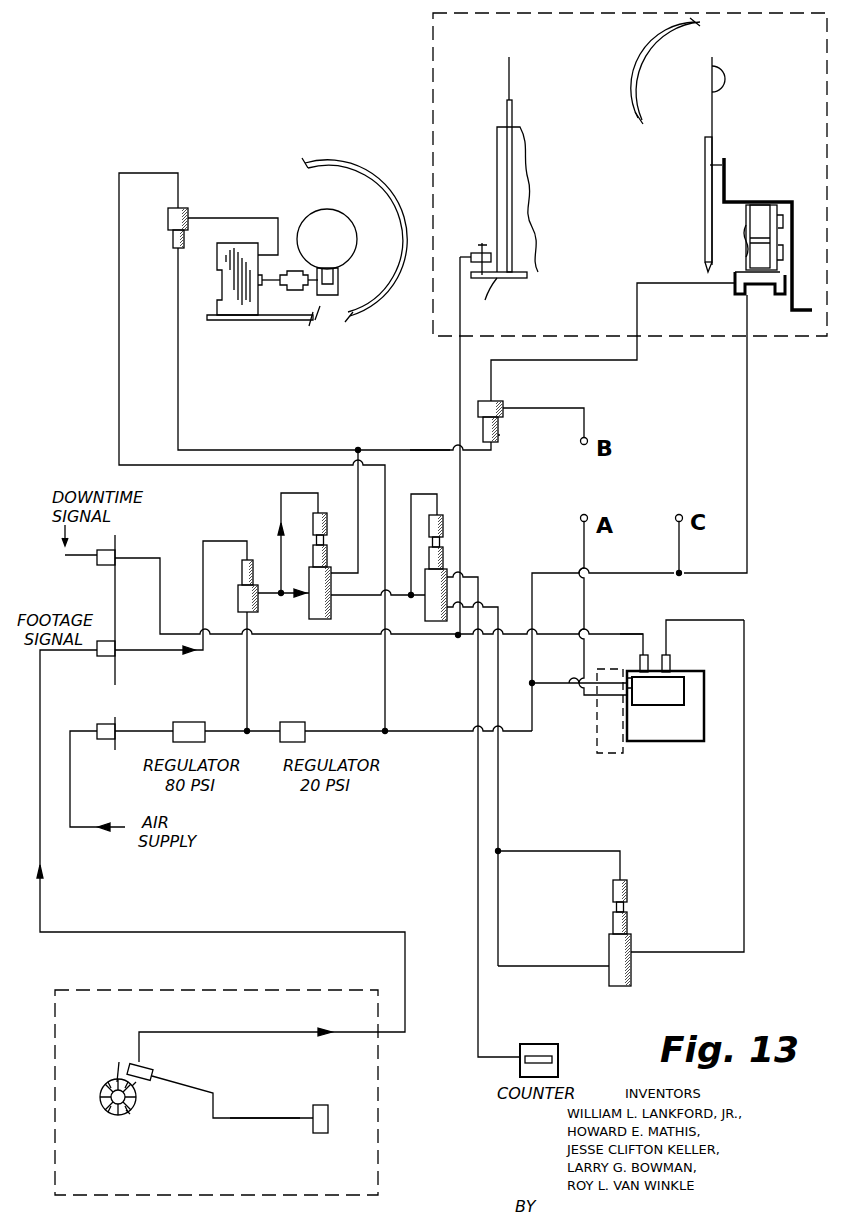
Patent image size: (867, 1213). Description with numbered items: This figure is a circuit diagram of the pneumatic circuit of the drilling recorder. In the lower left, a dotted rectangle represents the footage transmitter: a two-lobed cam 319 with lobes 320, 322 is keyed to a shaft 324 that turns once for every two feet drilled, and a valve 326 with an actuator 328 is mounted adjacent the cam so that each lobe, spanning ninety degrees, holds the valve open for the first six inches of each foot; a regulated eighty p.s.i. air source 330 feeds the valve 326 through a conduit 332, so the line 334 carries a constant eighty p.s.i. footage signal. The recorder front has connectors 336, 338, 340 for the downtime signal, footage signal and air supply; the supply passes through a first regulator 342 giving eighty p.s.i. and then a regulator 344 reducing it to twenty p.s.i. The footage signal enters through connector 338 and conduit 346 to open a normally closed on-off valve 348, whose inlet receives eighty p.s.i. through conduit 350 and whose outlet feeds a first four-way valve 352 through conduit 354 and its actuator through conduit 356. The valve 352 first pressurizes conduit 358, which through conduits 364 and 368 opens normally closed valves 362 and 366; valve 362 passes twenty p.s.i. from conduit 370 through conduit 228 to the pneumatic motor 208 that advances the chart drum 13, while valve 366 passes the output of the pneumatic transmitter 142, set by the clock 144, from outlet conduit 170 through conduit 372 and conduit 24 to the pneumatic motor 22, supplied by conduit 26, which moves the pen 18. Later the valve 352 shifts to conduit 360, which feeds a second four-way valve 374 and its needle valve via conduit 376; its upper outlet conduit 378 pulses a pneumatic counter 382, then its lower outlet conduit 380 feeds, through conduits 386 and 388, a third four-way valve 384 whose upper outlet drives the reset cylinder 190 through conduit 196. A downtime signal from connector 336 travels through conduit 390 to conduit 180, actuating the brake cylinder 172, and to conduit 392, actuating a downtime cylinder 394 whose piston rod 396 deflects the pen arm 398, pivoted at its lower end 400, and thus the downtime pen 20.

The chart drum 13 is at (363, 172).
The pen 18 is at (706, 82).
The downtime pen 20 is at (507, 62).
The pneumatic motor 22 is at (759, 213).
The conduit 24 is at (637, 314).
The supply conduit 26 is at (747, 389).
The pneumatic transmitter 142 is at (666, 738).
The clock 144 is at (608, 756).
The outlet conduit 170 is at (591, 696).
The pneumatic cylinder 172 is at (640, 666).
The conduit 180 is at (642, 636).
The reset cylinder 190 is at (670, 660).
The conduit 196 is at (709, 952).
The pneumatic motor 208 is at (240, 300).
The conduit 228 is at (242, 218).
The cam 319 is at (106, 1084).
The lobe 320 is at (134, 1083).
The lobe 322 is at (110, 1110).
The shaft 324 is at (130, 1108).
The valve 326 is at (147, 1070).
The actuator 328 is at (116, 1064).
The source of supply of air under pressure 330 is at (320, 1133).
The conduit 332 is at (239, 1118).
The line 334 is at (280, 1030).
The connector 336 is at (105, 566).
The connector 338 is at (104, 659).
The connector 340 is at (106, 740).
The first regulator 342 is at (190, 730).
The regulator 344 is at (282, 730).
The conduit 346 is at (180, 653).
The normally closed on-off valve 348 is at (240, 598).
The conduit 350 is at (247, 694).
The first four-way valve 352 is at (323, 614).
The conduit 354 is at (290, 600).
The conduit 356 is at (280, 494).
The conduit 358 is at (358, 495).
The conduit 360 is at (372, 585).
The normally closed valve 362 is at (188, 213).
The conduit 364 is at (265, 451).
The normally closed valve 366 is at (500, 437).
The conduit 368 is at (424, 452).
The conduit 370 is at (117, 288).
The conduit 372 is at (516, 403).
The second four-way valve 374 is at (433, 609).
The conduit 376 is at (398, 502).
The conduit 378 is at (488, 574).
The conduit 380 is at (510, 597).
The pneumatic counter 382 is at (556, 1030).
The third four-way valve 384 is at (612, 986).
The conduit 386 is at (566, 952).
The conduit 388 is at (585, 852).
The conduit 390 is at (325, 637).
The conduit 392 is at (456, 369).
The downtime cylinder 394 is at (473, 252).
The piston rod 396 is at (493, 274).
The pen arm 398 is at (503, 167).
The lower end 400 is at (527, 274).